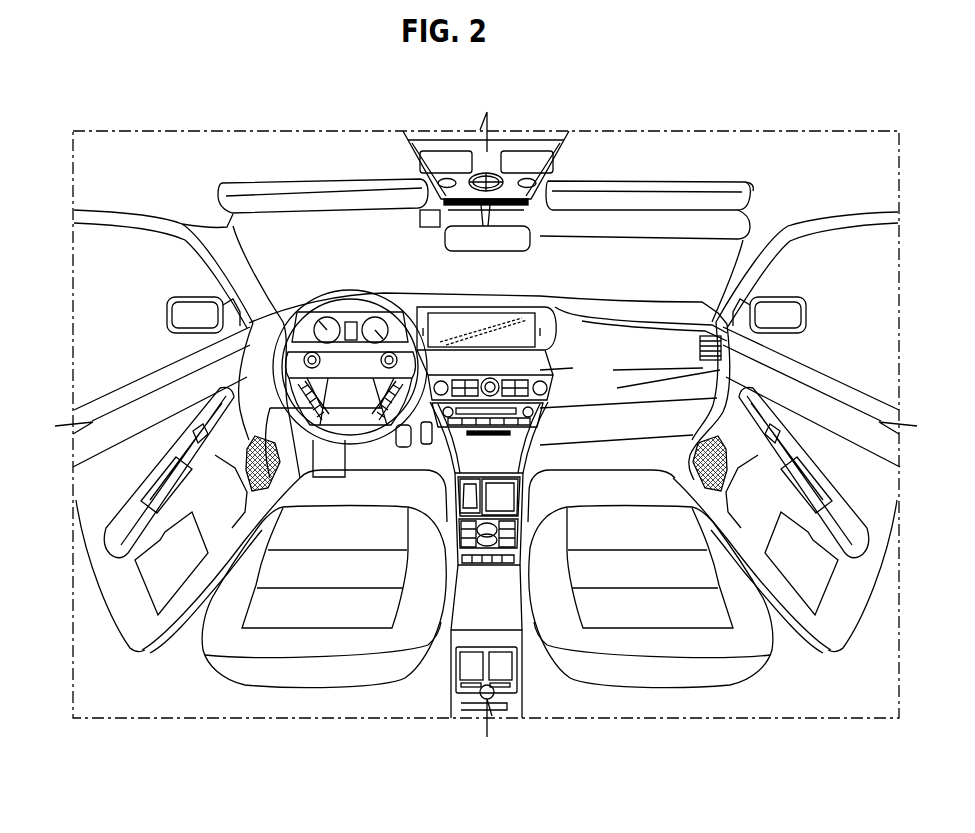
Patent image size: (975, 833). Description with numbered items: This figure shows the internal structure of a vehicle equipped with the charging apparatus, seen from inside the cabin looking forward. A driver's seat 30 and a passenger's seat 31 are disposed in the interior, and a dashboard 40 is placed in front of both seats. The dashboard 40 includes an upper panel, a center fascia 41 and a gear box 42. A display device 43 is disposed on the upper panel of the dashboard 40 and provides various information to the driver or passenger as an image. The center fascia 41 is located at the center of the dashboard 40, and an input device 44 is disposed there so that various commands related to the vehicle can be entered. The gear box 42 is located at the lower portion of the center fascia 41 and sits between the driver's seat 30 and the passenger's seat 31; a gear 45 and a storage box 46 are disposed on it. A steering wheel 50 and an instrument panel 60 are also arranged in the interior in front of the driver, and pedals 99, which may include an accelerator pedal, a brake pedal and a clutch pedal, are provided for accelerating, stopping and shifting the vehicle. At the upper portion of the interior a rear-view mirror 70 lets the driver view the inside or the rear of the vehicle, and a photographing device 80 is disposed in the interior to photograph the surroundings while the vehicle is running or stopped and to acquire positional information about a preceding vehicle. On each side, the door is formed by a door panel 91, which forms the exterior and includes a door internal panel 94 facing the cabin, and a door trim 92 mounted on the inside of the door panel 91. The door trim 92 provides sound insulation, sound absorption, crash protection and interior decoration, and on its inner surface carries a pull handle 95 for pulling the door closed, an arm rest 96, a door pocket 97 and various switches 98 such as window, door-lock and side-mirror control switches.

The driver's seat 30 is at (323, 644).
The passenger's seat 31 is at (650, 644).
The dashboard 40 is at (661, 308).
The center fascia 41 is at (545, 409).
The gear box 42 is at (524, 510).
The display device 43 is at (530, 302).
The input device 44 is at (493, 381).
The gear 45 is at (462, 483).
The storage box 46 is at (505, 489).
The steering wheel 50 is at (359, 305).
The instrument panel 60 is at (340, 313).
The rear-view mirror 70 is at (525, 241).
The photographing device 80 is at (430, 178).
The door panel 91 is at (135, 411).
The door trim 92 is at (83, 494).
The door internal panel 94 is at (82, 443).
The pull handle 95 is at (212, 405).
The arm rest 96 is at (123, 518).
The door pocket 97 is at (140, 570).
The switches 98 is at (192, 426).
The pedals 99 is at (400, 446).